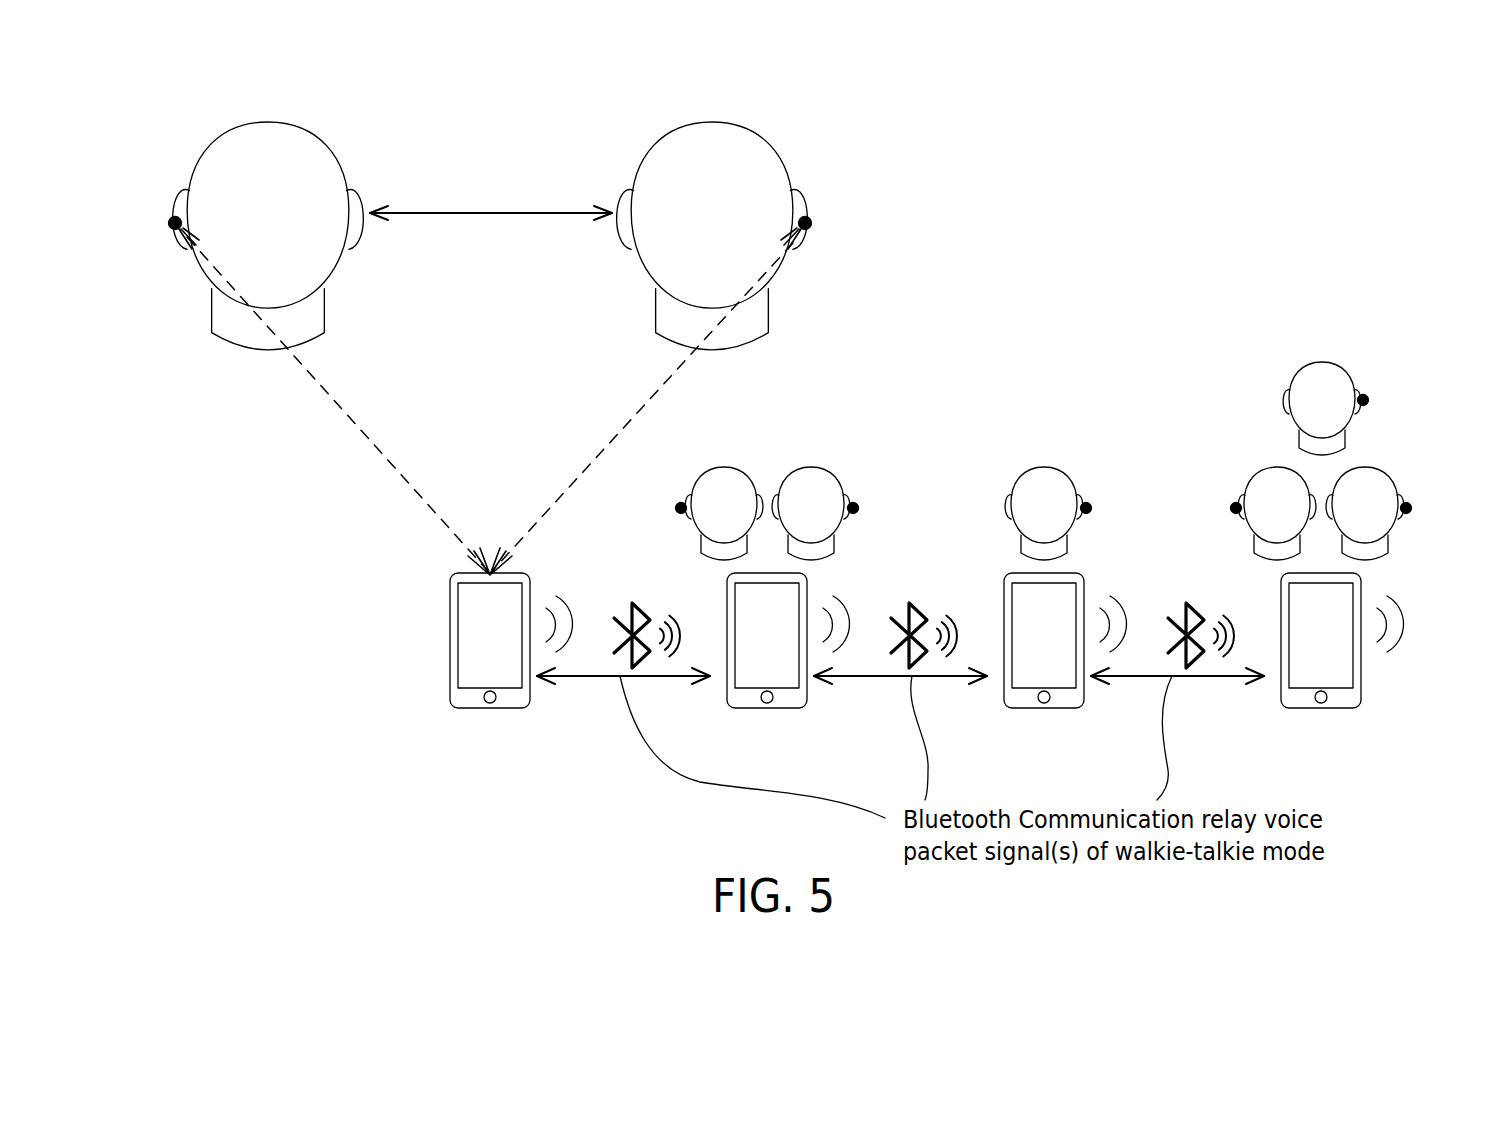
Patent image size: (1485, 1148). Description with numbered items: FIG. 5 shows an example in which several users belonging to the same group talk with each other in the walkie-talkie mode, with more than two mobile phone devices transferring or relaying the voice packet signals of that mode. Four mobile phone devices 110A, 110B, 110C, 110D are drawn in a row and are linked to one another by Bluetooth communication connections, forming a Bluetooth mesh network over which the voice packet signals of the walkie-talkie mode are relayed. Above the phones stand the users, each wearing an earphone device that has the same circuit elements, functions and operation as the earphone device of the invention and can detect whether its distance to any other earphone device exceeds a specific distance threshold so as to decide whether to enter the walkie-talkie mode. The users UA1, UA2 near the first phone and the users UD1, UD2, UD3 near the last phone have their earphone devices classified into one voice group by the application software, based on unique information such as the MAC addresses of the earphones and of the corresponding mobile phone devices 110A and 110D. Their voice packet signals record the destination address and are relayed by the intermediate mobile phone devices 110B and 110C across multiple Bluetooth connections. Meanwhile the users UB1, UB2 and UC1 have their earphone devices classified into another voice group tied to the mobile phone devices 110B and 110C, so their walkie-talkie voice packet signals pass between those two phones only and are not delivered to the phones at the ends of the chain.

The mobile phone device 110A is at (490, 710).
The mobile phone device 110B is at (767, 710).
The mobile phone device 110C is at (1044, 710).
The mobile phone device 110D is at (1321, 710).
The user UA1 is at (268, 219).
The user UA2 is at (712, 219).
The user UB1 is at (724, 499).
The user UB2 is at (811, 499).
The user UC1 is at (1044, 499).
The user UD1 is at (1322, 394).
The user UD2 is at (1269, 499).
The user UD3 is at (1369, 499).